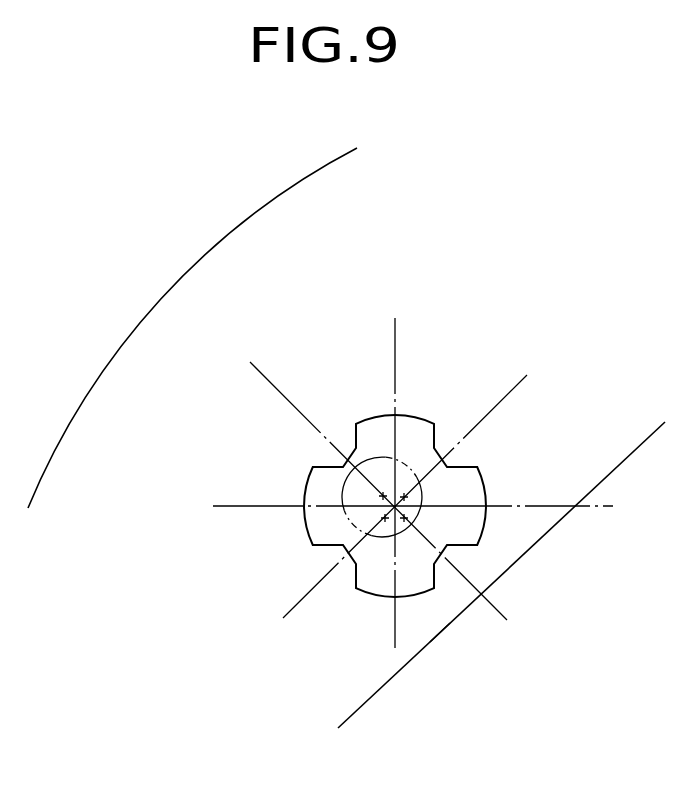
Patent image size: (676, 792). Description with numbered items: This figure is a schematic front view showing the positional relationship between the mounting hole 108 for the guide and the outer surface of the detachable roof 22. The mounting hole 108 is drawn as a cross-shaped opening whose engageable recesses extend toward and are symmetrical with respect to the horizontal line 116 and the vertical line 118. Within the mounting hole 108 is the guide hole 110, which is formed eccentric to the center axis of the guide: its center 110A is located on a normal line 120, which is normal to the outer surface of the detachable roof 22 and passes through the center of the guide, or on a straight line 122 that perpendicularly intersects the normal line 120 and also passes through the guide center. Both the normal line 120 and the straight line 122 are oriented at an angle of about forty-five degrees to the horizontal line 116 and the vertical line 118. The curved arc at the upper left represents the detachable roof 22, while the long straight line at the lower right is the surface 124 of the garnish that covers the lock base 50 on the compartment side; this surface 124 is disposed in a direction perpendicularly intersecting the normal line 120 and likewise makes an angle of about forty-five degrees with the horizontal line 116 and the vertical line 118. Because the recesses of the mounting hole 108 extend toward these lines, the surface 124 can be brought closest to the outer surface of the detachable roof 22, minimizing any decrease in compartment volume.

The detachable roof 22 is at (222, 233).
The lock base 50 is at (365, 683).
The mounting hole 108 is at (452, 462).
The guide hole 110 is at (374, 457).
The center of the guide hole 110A is at (383, 517).
The horizontal line 116 is at (593, 513).
The vertical line 118 is at (395, 345).
The normal line 120 is at (266, 376).
The straight line 122 is at (513, 380).
The surface of the garnish 124 is at (440, 633).